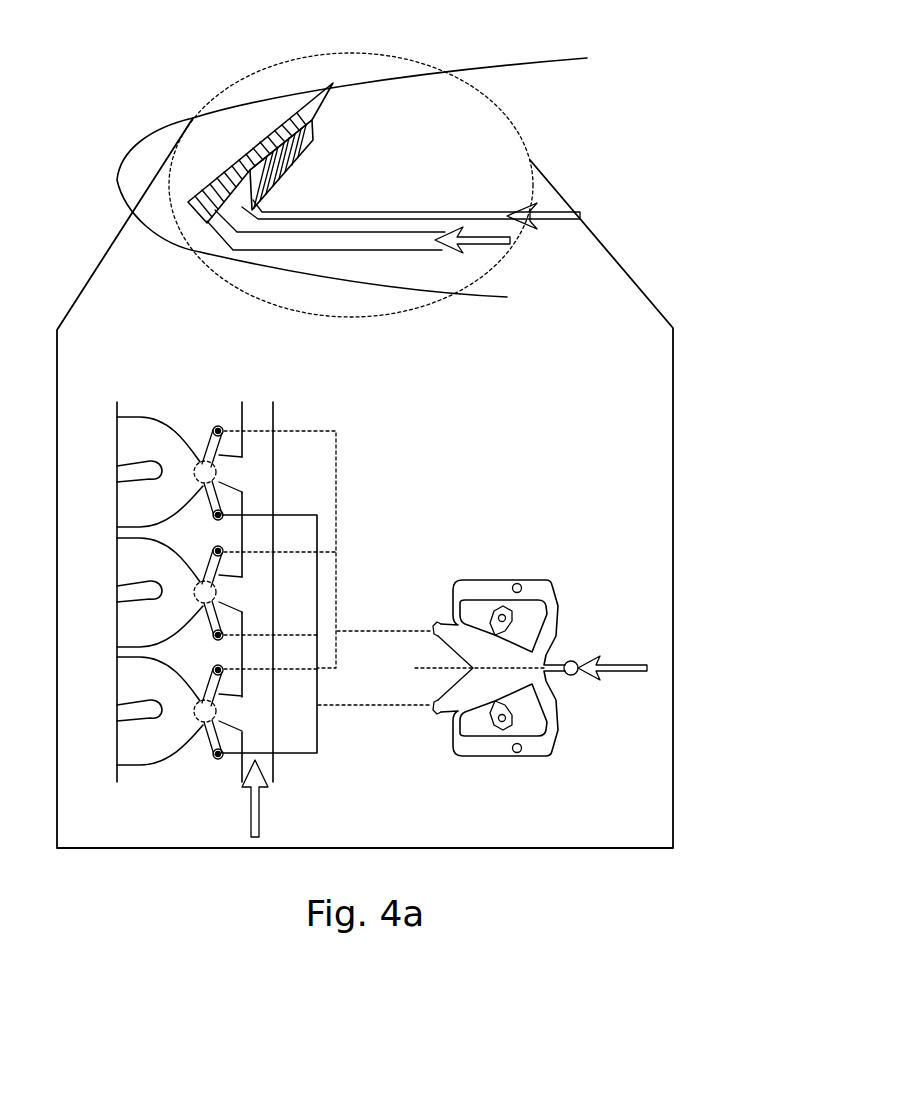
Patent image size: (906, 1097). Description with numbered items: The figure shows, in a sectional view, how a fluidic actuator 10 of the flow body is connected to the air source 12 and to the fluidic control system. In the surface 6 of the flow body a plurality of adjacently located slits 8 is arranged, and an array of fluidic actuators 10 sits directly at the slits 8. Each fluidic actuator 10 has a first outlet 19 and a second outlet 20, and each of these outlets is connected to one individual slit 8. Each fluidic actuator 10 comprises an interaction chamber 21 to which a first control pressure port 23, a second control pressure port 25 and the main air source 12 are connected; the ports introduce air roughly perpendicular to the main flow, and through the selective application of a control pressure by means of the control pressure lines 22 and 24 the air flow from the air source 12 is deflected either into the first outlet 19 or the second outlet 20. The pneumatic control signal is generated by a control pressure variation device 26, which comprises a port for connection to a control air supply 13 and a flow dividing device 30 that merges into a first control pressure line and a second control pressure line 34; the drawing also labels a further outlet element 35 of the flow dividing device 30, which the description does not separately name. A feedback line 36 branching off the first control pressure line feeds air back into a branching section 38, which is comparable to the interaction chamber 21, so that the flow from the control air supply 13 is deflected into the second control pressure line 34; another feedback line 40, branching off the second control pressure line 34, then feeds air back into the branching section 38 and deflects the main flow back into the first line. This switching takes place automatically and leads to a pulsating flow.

The surface 6 is at (280, 86).
The slits 8 is at (312, 84).
The fluidic actuator 10 is at (230, 168).
The air source 12 is at (516, 243).
The control air supply 13 is at (566, 216).
The first outlet 19 is at (138, 427).
The second outlet 20 is at (130, 497).
The interaction chamber 21 is at (194, 458).
The control pressure line 22 is at (218, 484).
The first control pressure port 23 is at (222, 516).
The control pressure line 24 is at (222, 438).
The second control pressure port 25 is at (203, 458).
The control pressure variation device 26 is at (300, 140).
The flow dividing device 30 is at (488, 678).
The second control pressure line 34 is at (437, 627).
The lower tab 35 is at (437, 709).
The feedback line 36 is at (535, 752).
The branching section 38 is at (543, 655).
The feedback line 40 is at (485, 590).